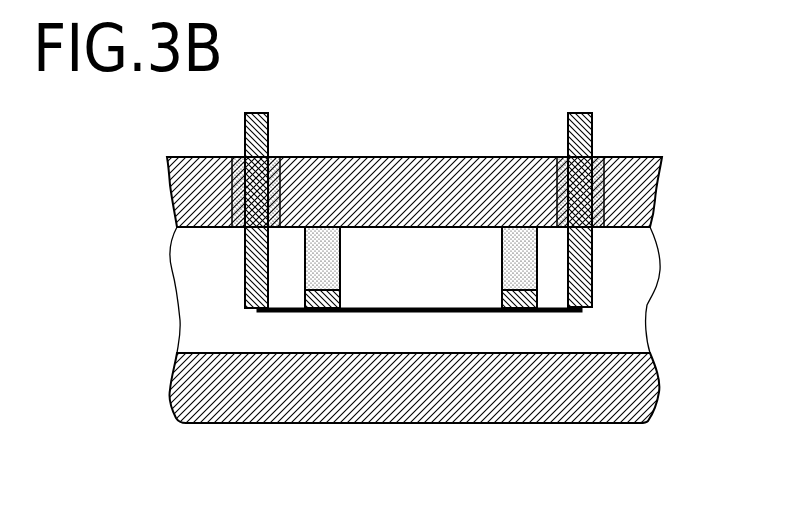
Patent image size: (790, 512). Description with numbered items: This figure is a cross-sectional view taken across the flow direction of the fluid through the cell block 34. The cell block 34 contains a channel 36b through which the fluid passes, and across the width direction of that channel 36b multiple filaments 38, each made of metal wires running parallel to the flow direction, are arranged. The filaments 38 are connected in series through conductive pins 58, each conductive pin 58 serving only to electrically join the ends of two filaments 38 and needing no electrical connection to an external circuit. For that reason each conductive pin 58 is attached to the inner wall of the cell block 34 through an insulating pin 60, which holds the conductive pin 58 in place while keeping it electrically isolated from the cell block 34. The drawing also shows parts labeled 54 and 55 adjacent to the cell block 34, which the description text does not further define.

The cell block 34 is at (395, 182).
The channel 36b is at (425, 252).
The filament 38 is at (465, 312).
The pillar lower portion 54 is at (247, 240).
The pillar / post 55 is at (240, 168).
The conductive pin 58 is at (303, 298).
The insulating pin 60 is at (315, 269).